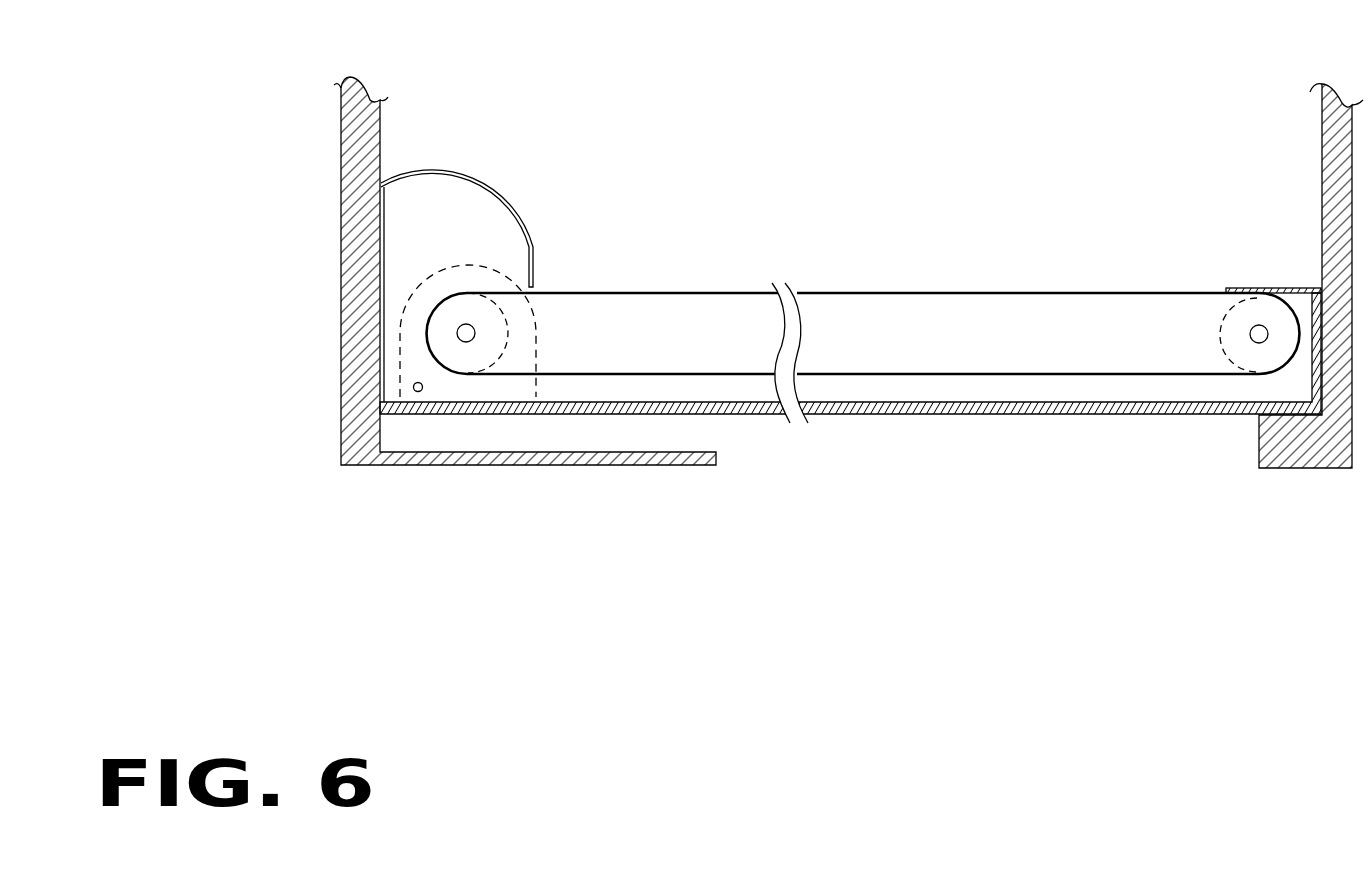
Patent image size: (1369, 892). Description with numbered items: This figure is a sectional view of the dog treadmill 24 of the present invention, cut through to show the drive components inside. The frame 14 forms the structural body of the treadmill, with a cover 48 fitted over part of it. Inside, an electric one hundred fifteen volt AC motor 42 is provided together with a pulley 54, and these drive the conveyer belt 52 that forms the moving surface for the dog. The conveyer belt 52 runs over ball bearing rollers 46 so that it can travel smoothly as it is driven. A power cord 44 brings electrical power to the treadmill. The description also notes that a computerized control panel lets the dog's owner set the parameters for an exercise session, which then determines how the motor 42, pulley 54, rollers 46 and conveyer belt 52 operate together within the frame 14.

The frame 14 is at (1330, 453).
The dog treadmill 24 is at (857, 328).
The electric motor 42 is at (400, 312).
The power cord 44 is at (413, 386).
The ball bearing rollers 46 is at (474, 316).
The cover 48 is at (452, 170).
The conveyer belt 52 is at (853, 293).
The pulley 54 is at (451, 292).